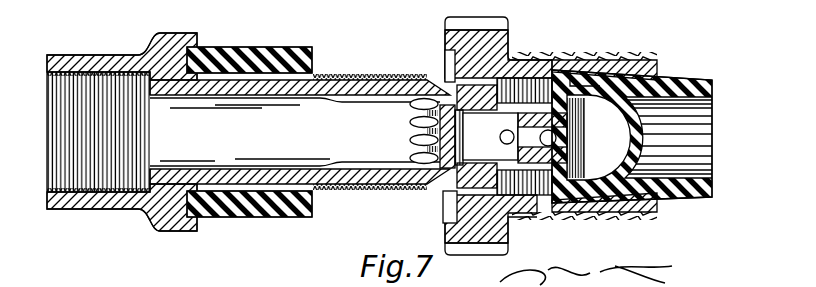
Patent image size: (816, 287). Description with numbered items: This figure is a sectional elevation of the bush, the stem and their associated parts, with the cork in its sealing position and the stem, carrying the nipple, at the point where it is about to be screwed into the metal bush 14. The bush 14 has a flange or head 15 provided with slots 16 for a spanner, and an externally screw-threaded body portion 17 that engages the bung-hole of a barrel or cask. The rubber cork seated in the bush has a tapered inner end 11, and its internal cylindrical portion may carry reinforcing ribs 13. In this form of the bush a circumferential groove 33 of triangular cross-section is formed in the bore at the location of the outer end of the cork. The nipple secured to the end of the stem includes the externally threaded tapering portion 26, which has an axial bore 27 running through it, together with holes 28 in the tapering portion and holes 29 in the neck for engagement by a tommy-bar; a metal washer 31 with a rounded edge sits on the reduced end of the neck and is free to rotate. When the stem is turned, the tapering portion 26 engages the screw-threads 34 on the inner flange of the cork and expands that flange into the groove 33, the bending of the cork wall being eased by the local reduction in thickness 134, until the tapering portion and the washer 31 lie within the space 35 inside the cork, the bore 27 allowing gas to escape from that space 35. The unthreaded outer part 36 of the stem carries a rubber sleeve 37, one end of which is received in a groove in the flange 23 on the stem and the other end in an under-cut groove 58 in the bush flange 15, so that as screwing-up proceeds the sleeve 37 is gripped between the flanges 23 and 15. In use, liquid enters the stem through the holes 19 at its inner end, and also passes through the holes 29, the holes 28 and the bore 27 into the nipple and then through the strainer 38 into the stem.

The tapered inner end 11 is at (673, 80).
The reinforcing ribs 13 is at (675, 140).
The metal bush 14 is at (518, 63).
The flange or head 15 is at (448, 39).
The slots 16 is at (454, 20).
The body portion 17 is at (597, 217).
The holes 19 is at (410, 121).
The flange 23 is at (197, 230).
The tapering portion 26 is at (585, 80).
The axial bore 27 is at (521, 140).
The holes 28 is at (573, 197).
The holes 29 is at (500, 135).
The metal washer 31 is at (533, 200).
The circumferential groove 33 is at (555, 70).
The screw-threads 34 is at (615, 67).
The space 35 is at (637, 173).
The outer part of the stem 36 is at (261, 178).
The rubber sleeve 37 is at (312, 52).
The strainer 38 is at (437, 142).
The under-cut groove 58 is at (447, 50).
The local reduction in wall thickness 134 is at (630, 217).